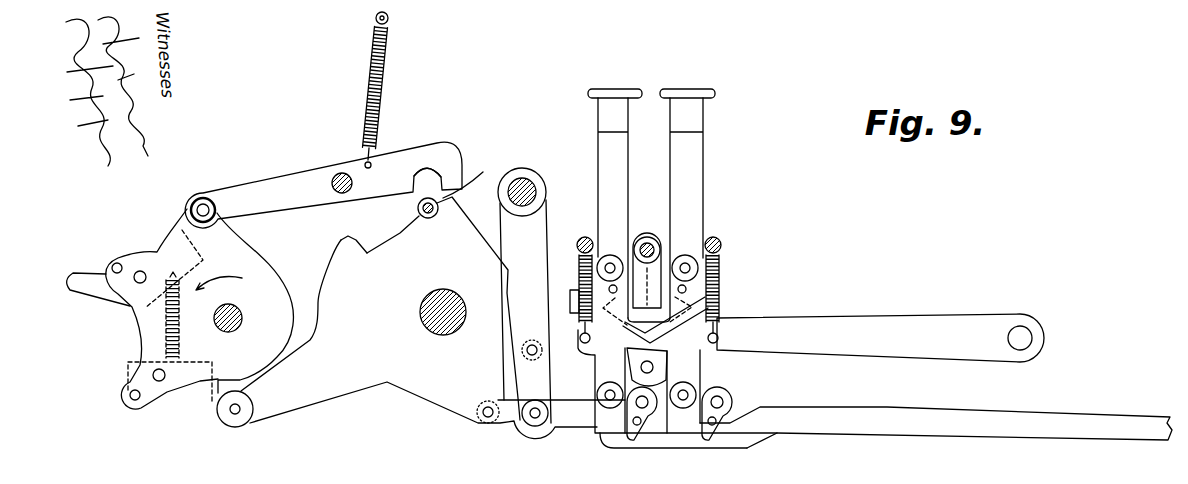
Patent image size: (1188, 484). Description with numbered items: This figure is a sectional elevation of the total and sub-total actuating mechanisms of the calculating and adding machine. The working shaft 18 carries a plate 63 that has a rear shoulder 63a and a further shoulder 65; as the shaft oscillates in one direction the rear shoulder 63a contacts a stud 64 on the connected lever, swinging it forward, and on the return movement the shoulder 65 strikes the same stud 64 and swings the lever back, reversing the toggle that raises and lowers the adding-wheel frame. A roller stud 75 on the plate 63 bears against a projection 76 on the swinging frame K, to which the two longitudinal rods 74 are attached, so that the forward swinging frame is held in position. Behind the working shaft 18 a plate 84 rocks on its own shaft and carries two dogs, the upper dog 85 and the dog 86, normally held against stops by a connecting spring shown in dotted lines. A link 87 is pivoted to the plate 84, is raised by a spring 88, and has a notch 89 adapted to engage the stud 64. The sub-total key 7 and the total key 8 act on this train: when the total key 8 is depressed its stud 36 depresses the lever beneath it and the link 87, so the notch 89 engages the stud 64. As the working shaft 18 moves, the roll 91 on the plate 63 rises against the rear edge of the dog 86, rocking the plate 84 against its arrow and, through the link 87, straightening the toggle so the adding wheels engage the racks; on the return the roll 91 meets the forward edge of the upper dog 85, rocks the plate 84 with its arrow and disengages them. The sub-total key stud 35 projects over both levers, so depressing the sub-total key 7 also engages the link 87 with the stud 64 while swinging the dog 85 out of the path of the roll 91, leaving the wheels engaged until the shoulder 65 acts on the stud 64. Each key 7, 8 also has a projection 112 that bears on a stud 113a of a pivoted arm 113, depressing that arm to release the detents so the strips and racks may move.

The sub-total key 7 is at (592, 90).
The total key 8 is at (714, 90).
The working shaft 18 is at (450, 336).
The sub-total key stud 35 is at (610, 262).
The total key stud 36 is at (688, 262).
The plate 63 is at (351, 305).
The rear shoulder 63a is at (340, 231).
The stud 64 is at (409, 212).
The shoulder 65 is at (511, 175).
The longitudinal rods 74 is at (895, 412).
The roller stud 75 is at (479, 423).
The projections 76 is at (515, 428).
The plate 84 is at (248, 320).
The upper dog 85 is at (123, 302).
The dog 86 is at (198, 394).
The link 87 is at (285, 176).
The spring 88 is at (363, 97).
The notch 89 is at (427, 170).
The roll 91 is at (235, 427).
The projection 112 is at (705, 300).
The pivoted arm 113 is at (843, 343).
The stud 113a is at (657, 367).
The swinging frame K is at (524, 295).